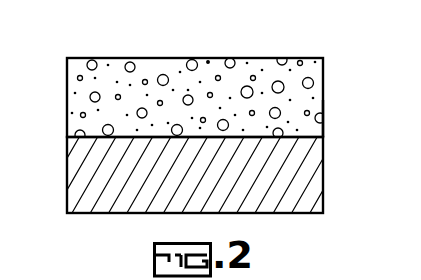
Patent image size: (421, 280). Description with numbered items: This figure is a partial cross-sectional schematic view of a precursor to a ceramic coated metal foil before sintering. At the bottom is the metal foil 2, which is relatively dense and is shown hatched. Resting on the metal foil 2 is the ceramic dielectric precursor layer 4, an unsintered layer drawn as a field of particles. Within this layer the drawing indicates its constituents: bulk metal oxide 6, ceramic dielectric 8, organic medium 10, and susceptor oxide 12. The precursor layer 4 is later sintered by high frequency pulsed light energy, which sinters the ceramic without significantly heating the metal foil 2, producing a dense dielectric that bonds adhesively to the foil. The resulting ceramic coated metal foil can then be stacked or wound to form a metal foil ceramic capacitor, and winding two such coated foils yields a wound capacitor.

The metal foil 2 is at (302, 170).
The ceramic dielectric precursor layer 4 is at (323, 100).
The bulk metal oxide 6 is at (190, 59).
The ceramic dielectric 8 is at (307, 127).
The organic medium 10 is at (121, 77).
The susceptor oxide 12 is at (216, 75).